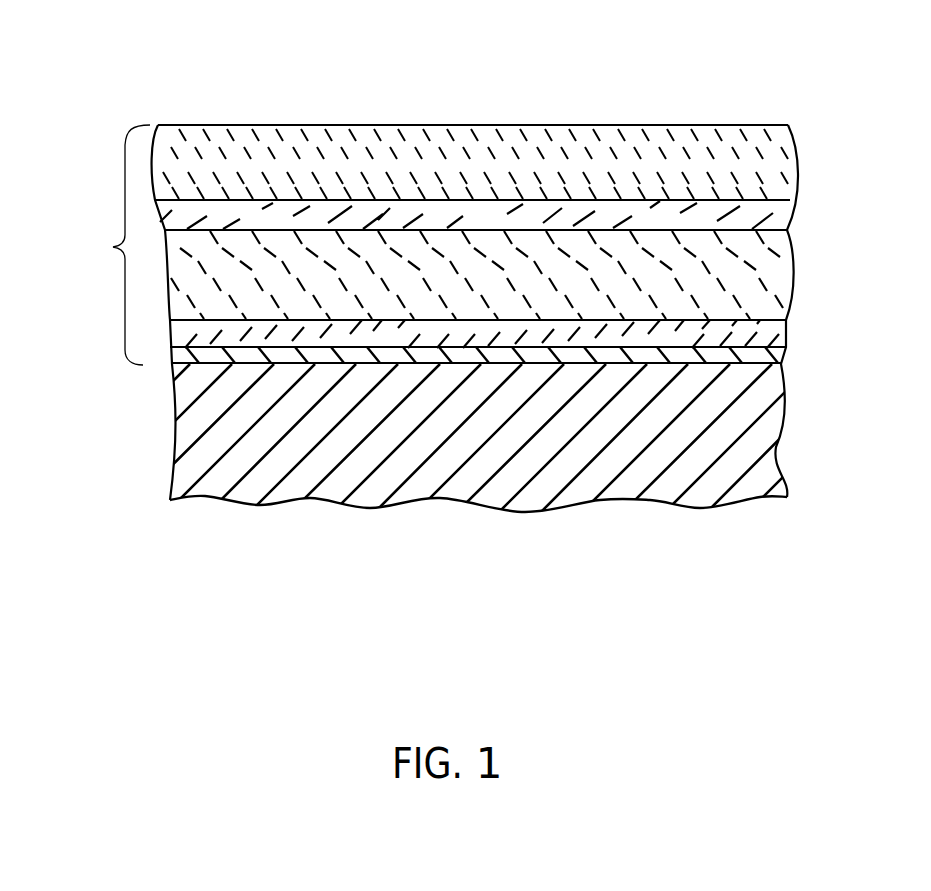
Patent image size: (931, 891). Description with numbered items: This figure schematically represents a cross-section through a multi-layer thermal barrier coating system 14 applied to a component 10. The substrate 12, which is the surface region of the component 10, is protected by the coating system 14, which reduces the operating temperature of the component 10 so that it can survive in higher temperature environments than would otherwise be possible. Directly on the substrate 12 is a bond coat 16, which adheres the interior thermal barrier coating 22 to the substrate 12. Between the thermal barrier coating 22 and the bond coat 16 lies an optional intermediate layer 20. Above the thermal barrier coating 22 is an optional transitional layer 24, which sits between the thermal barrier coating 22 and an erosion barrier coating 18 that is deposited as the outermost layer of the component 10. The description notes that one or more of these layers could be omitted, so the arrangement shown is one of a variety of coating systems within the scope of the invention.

The component 10 is at (148, 58).
The substrate 12 is at (197, 453).
The multi-layer thermal barrier coating system 14 is at (465, 268).
The bond coat 16 is at (498, 365).
The erosion barrier coating 18 is at (787, 142).
The intermediate layer 20 is at (282, 357).
The thermal barrier coating 22 is at (487, 240).
The transitional layer 24 is at (397, 215).